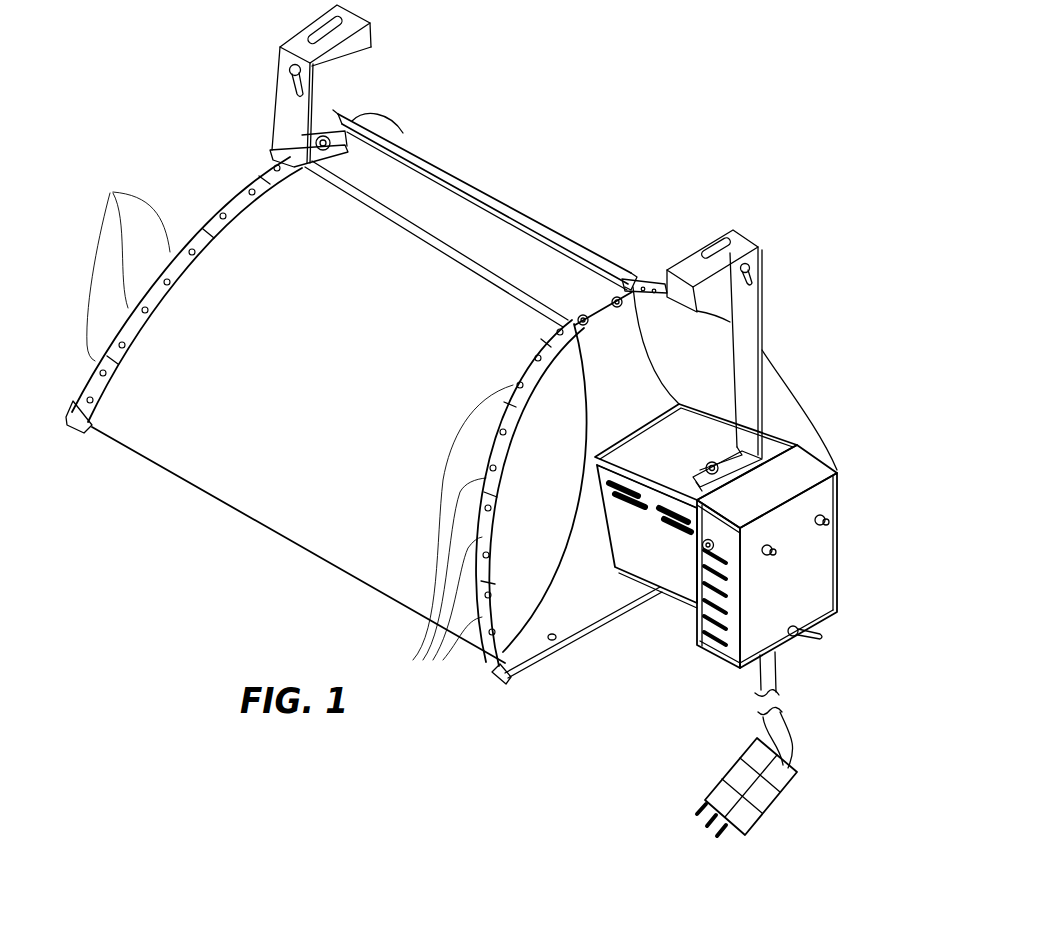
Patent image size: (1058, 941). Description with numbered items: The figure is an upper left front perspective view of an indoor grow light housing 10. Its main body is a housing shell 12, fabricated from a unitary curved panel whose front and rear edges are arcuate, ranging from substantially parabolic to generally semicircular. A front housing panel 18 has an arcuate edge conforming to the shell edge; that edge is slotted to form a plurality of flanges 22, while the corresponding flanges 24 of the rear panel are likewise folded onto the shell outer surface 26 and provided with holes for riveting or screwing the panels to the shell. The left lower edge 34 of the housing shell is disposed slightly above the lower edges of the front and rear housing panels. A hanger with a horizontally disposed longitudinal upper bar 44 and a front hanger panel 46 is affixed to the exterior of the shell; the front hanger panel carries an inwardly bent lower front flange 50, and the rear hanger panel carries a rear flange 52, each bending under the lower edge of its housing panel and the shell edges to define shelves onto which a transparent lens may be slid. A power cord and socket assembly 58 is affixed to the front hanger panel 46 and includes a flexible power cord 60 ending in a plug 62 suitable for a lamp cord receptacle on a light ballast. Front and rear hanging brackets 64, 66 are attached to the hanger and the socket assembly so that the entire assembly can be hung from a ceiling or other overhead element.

The light housing 10 is at (690, 78).
The housing shell 12 is at (252, 393).
The front housing panel 18 is at (545, 570).
The flanges 22 is at (413, 660).
The flanges 24 is at (217, 212).
The shell outer surface 26 is at (381, 344).
The left lower edge 34 is at (240, 513).
The longitudinal upper bar 44 is at (460, 212).
The front hanger panel 46 is at (620, 335).
The lower front flange 50 is at (495, 677).
The rear flange 52 is at (70, 430).
The power cord and socket assembly 58 is at (760, 610).
The flexible power cord 60 is at (757, 688).
The plug 62 is at (737, 760).
The front hanging bracket 64 is at (760, 293).
The rear hanging bracket 66 is at (280, 44).